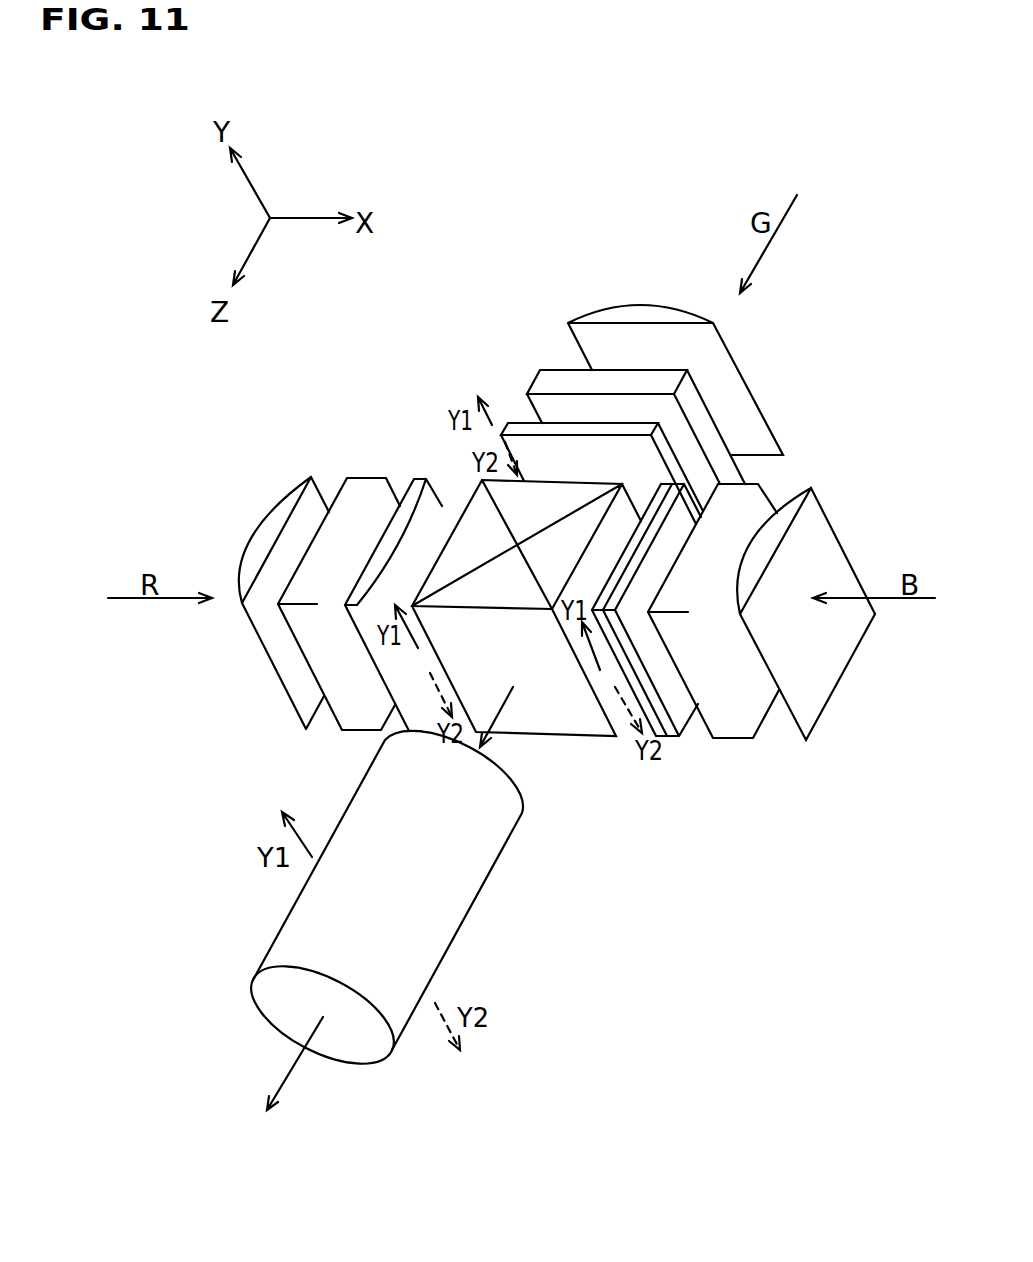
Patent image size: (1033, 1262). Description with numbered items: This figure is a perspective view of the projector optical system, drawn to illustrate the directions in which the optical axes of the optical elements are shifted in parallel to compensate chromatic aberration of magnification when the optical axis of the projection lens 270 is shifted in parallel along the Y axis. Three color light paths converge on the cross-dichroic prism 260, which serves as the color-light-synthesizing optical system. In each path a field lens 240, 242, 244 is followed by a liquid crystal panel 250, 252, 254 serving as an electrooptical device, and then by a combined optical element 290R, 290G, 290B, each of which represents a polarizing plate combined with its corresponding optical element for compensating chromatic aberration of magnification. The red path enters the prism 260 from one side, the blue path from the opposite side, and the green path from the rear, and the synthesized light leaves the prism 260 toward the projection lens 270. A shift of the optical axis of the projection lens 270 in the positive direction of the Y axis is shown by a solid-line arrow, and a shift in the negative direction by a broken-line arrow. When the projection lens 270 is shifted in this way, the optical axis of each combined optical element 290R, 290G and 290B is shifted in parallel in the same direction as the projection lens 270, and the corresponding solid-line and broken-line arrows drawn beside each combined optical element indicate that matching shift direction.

The field lens 240 is at (294, 477).
The field lens 242 is at (592, 308).
The field lens 244 is at (823, 707).
The liquid crystal panel 250 is at (362, 476).
The liquid crystal panel 252 is at (532, 390).
The liquid crystal panel 254 is at (732, 734).
The cross-dichroic prism 260 is at (572, 724).
The projection lens 270 is at (488, 880).
The combined optical element 290R is at (382, 679).
The combined optical element 290G is at (667, 452).
The combined optical element 290B is at (682, 716).